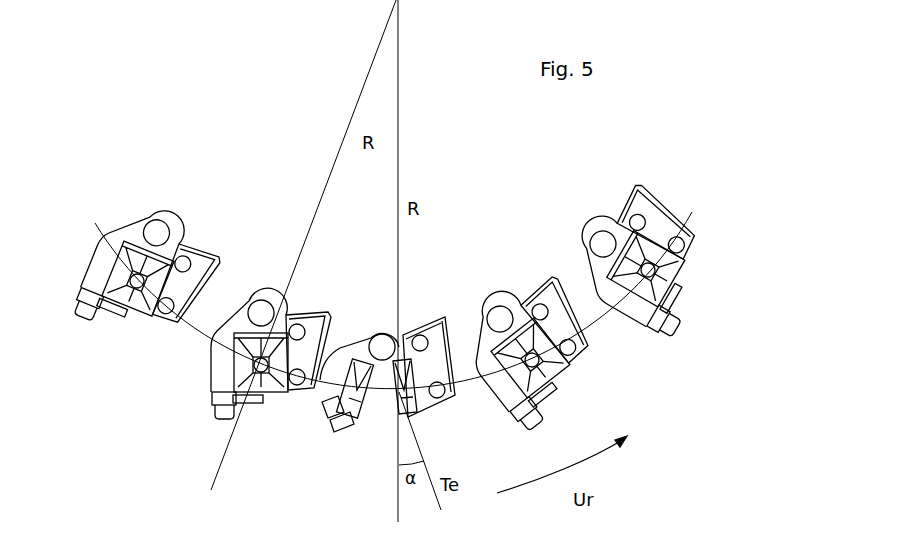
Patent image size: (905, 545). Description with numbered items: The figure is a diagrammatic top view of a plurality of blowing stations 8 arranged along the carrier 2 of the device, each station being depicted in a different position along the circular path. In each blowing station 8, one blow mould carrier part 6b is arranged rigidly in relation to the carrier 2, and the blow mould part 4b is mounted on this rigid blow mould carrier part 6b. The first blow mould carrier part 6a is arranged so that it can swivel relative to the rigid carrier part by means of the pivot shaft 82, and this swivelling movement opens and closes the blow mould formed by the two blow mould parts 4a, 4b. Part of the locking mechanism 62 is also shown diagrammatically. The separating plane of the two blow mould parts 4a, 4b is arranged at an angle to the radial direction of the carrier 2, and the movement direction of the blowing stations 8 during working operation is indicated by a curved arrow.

The carrier 2 is at (479, 136).
The pivot shaft 82 is at (145, 234).
The first blow mould carrier part 6a is at (95, 265).
The blow mould carrier part 6b is at (182, 290).
The blow mould part 4a is at (130, 284).
The blow mould part 4b is at (153, 286).
The locking mechanism 62 is at (107, 330).
The blowing station 8 is at (648, 346).